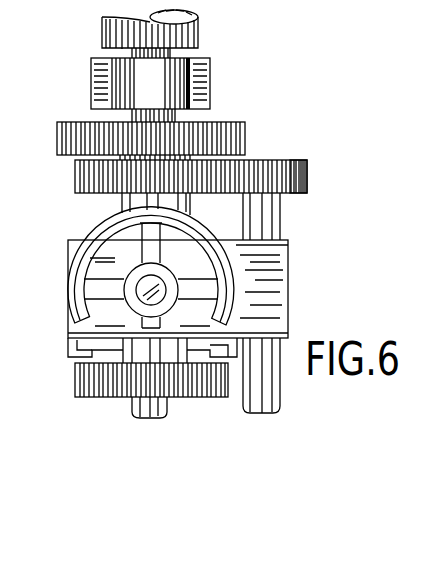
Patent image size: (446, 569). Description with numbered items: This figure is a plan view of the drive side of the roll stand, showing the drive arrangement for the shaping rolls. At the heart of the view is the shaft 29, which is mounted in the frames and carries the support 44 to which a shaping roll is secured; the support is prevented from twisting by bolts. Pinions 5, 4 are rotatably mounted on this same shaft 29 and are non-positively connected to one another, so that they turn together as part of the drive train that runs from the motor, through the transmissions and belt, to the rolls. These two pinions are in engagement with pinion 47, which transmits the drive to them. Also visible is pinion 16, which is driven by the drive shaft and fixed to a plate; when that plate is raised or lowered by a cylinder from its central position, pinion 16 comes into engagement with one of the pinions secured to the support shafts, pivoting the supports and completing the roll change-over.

The pinion 4 is at (231, 128).
The pinion 5 is at (87, 182).
The pinion 16 is at (137, 375).
The shaft 29 is at (127, 198).
The support 44 is at (122, 97).
The pinion 47 is at (290, 163).